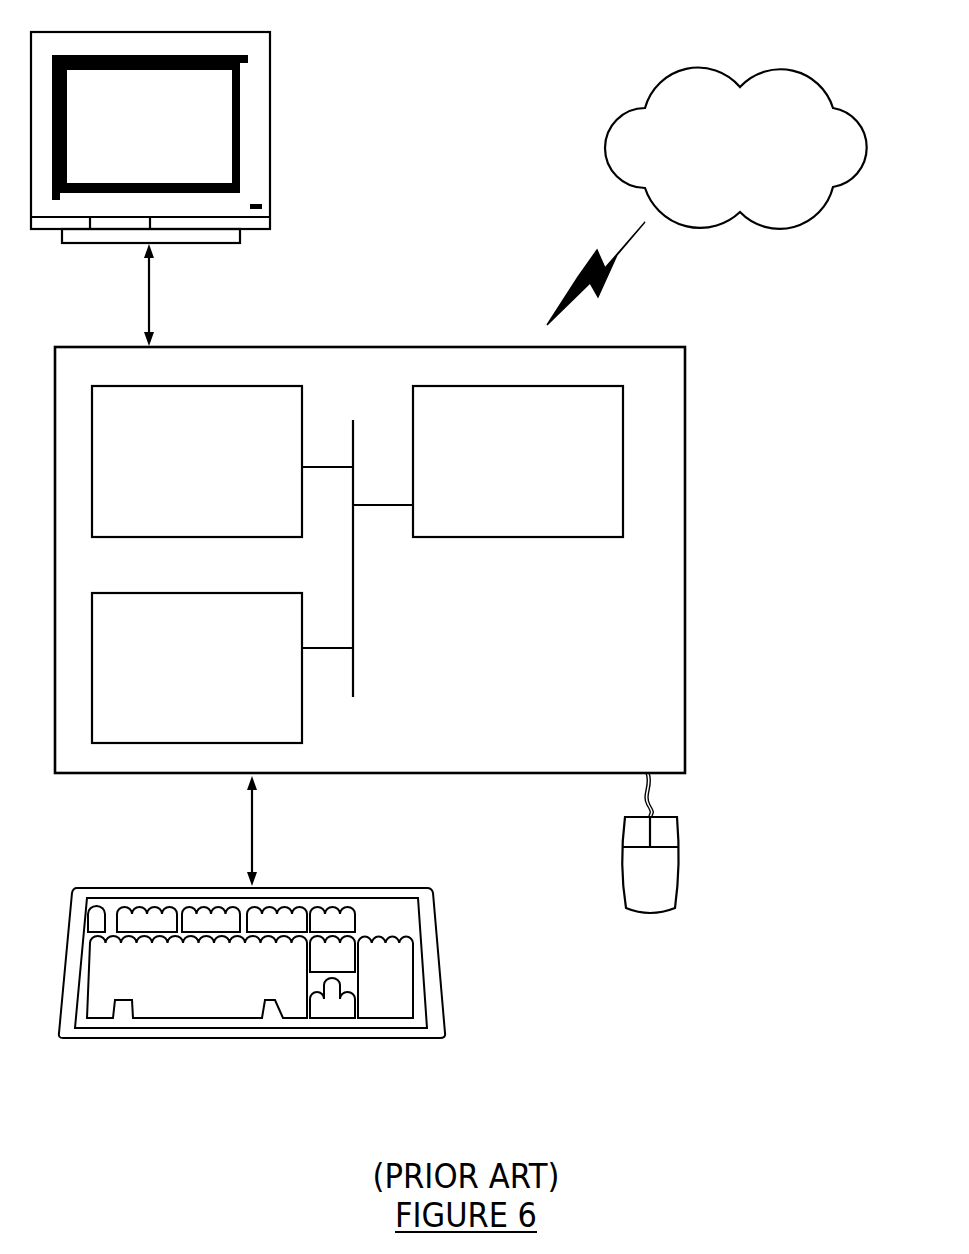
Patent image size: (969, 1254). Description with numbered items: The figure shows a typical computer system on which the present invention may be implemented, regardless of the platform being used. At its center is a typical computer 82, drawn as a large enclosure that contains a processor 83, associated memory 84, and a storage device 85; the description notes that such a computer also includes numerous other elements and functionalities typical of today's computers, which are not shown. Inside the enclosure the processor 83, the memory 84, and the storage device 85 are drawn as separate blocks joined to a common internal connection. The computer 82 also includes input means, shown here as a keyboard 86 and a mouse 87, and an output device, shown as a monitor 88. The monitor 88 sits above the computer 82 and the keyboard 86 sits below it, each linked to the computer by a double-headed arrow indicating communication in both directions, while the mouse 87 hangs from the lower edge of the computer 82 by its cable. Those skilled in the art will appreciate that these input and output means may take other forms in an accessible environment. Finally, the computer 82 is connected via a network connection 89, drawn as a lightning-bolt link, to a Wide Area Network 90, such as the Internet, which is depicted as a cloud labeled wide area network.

The computer 82 is at (685, 645).
The processor 83 is at (551, 475).
The memory 84 is at (213, 475).
The storage device 85 is at (209, 682).
The keyboard 86 is at (161, 988).
The mouse 87 is at (634, 890).
The monitor 88 is at (176, 151).
The network connection 89 is at (583, 267).
The Wide Area Network 90 is at (790, 70).